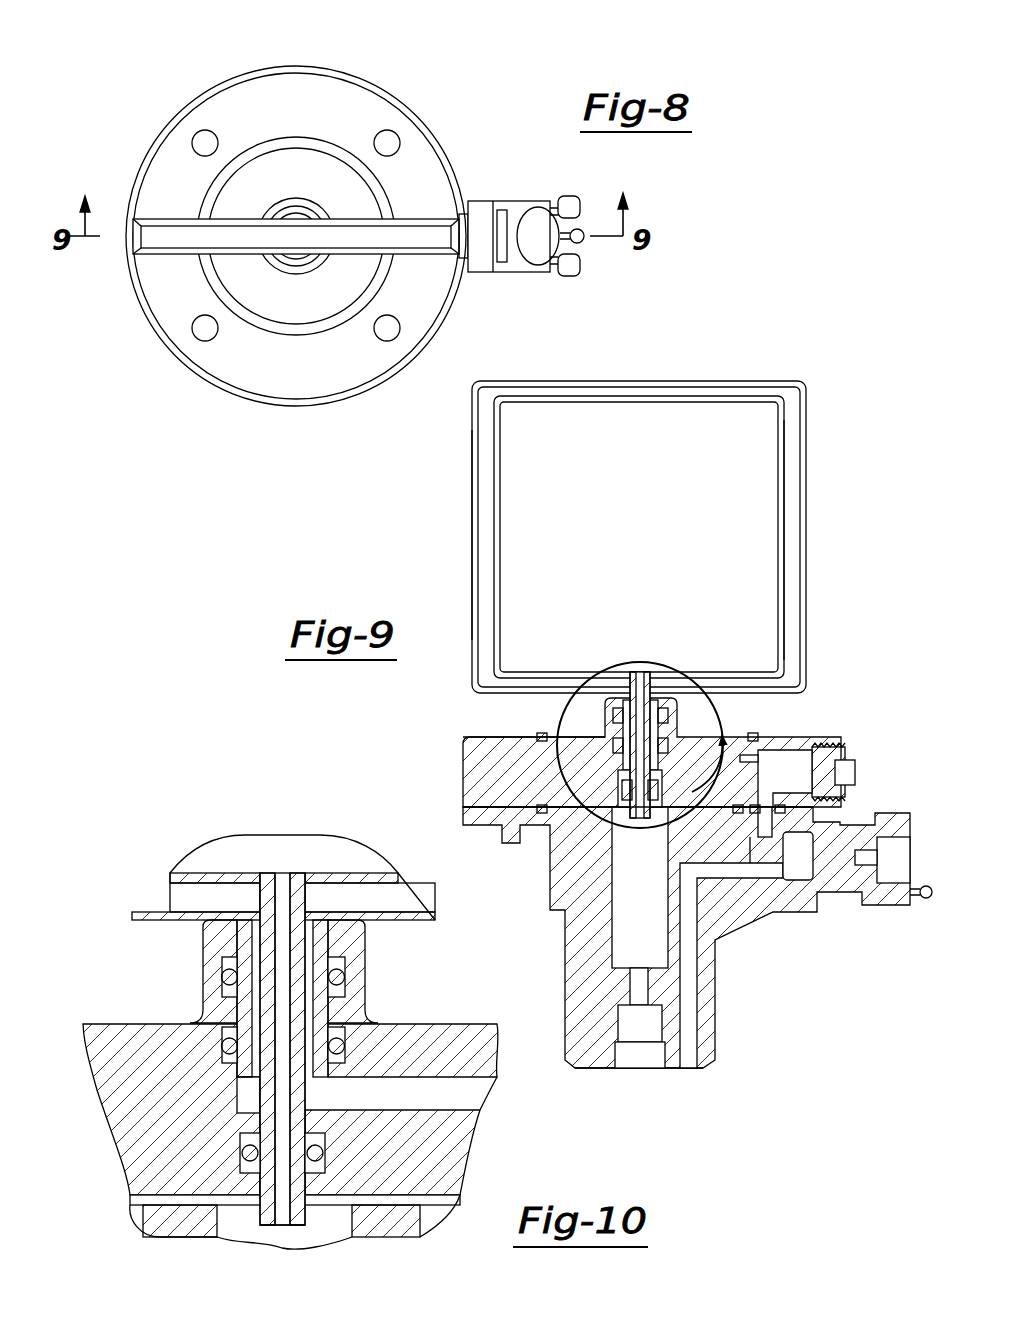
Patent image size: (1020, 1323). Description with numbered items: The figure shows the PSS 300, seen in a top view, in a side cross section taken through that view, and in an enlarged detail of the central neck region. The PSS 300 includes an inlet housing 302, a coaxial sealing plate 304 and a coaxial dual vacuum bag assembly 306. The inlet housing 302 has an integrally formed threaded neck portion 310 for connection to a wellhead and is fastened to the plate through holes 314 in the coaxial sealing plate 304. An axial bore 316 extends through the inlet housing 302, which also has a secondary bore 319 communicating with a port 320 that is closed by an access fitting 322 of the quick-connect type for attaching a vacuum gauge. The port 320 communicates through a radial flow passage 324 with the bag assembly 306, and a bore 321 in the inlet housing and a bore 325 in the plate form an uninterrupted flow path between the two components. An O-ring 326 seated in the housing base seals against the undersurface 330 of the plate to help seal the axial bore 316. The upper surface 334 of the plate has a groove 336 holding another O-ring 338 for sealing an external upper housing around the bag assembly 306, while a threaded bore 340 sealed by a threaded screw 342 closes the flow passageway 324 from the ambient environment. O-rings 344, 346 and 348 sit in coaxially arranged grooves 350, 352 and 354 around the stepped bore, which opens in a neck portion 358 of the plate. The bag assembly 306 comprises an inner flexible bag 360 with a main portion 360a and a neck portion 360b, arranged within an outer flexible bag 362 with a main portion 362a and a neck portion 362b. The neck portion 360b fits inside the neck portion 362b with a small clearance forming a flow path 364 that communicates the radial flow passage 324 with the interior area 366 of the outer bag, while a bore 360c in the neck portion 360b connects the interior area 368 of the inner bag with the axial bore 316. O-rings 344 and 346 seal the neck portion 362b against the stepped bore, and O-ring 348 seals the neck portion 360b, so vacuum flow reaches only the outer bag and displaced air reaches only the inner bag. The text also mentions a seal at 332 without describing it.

In FIG. 8, the PSS 300 is at (329, 216).
In FIG. 9, the PSS 300 is at (653, 703).
In FIG. 9, the inlet housing 302 is at (723, 946).
In FIG. 10, the inlet housing 302 is at (396, 1228).
In FIG. 8, the coaxial sealing plate 304 is at (341, 66).
In FIG. 9, the coaxial sealing plate 304 is at (461, 756).
In FIG. 8, the coaxial dual vacuum bag assembly 306 is at (427, 217).
In FIG. 9, the coaxial dual vacuum bag assembly 306 is at (468, 455).
In FIG. 9, the threaded neck portion 310 is at (708, 1005).
In FIG. 8, the holes 314 is at (192, 143).
In FIG. 9, the axial bore 316 is at (640, 1050).
In FIG. 10, the axial bore 316 is at (258, 1232).
In FIG. 9, the secondary bore 319 is at (688, 1060).
In FIG. 9, the port 320 is at (805, 872).
In FIG. 9, the bore 321 is at (766, 840).
In FIG. 8, the access fitting 322 is at (522, 203).
In FIG. 9, the access fitting 322 is at (905, 829).
In FIG. 9, the radial flow passage 324 is at (797, 762).
In FIG. 10, the radial flow passage 324 is at (437, 1105).
In FIG. 9, the bore 325 is at (768, 795).
In FIG. 9, the O-ring 326 is at (485, 803).
In FIG. 9, the undersurface 330 is at (541, 813).
In FIG. 9, the seal 332 is at (580, 842).
In FIG. 8, the upper surface 334 is at (165, 180).
In FIG. 9, the upper surface 334 is at (490, 735).
In FIG. 10, the upper surface 334 is at (100, 1024).
In FIG. 8, the groove 336 is at (266, 332).
In FIG. 9, the groove 336 is at (540, 735).
In FIG. 8, the O-ring 338 is at (380, 268).
In FIG. 9, the O-ring 338 is at (750, 733).
In FIG. 9, the threaded bore 340 is at (814, 747).
In FIG. 9, the threaded screw 342 is at (846, 752).
In FIG. 10, the O-ring 344 is at (222, 990).
In FIG. 10, the O-ring 346 is at (228, 1050).
In FIG. 10, the O-ring 348 is at (248, 1158).
In FIG. 10, the groove 350 is at (225, 957).
In FIG. 10, the groove 352 is at (346, 1027).
In FIG. 10, the groove 354 is at (325, 1145).
In FIG. 8, the neck portion 358 is at (297, 198).
In FIG. 10, the neck portion 358 is at (346, 957).
In FIG. 9, the inner flexible bag 360 is at (661, 537).
In FIG. 9, the main portion 360a is at (787, 545).
In FIG. 10, the main portion 360a is at (218, 878).
In FIG. 10, the neck portion 360b is at (255, 898).
In FIG. 9, the bore 360c is at (640, 675).
In FIG. 10, the bore 360c is at (282, 1206).
In FIG. 9, the outer flexible bag 362 is at (661, 537).
In FIG. 10, the main portion 362a is at (140, 913).
In FIG. 10, the neck portion 362b is at (245, 945).
In FIG. 10, the flow path 364 is at (312, 890).
In FIG. 9, the interior area 366 is at (795, 470).
In FIG. 9, the interior area 368 is at (525, 505).